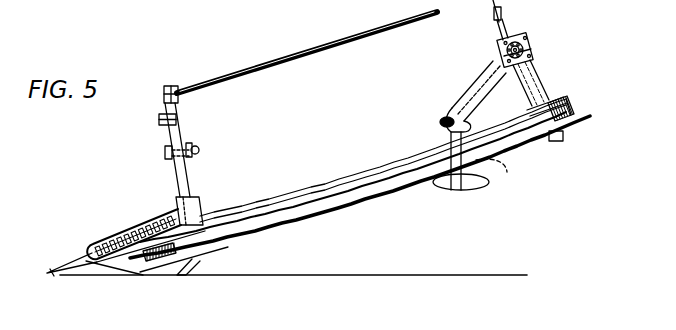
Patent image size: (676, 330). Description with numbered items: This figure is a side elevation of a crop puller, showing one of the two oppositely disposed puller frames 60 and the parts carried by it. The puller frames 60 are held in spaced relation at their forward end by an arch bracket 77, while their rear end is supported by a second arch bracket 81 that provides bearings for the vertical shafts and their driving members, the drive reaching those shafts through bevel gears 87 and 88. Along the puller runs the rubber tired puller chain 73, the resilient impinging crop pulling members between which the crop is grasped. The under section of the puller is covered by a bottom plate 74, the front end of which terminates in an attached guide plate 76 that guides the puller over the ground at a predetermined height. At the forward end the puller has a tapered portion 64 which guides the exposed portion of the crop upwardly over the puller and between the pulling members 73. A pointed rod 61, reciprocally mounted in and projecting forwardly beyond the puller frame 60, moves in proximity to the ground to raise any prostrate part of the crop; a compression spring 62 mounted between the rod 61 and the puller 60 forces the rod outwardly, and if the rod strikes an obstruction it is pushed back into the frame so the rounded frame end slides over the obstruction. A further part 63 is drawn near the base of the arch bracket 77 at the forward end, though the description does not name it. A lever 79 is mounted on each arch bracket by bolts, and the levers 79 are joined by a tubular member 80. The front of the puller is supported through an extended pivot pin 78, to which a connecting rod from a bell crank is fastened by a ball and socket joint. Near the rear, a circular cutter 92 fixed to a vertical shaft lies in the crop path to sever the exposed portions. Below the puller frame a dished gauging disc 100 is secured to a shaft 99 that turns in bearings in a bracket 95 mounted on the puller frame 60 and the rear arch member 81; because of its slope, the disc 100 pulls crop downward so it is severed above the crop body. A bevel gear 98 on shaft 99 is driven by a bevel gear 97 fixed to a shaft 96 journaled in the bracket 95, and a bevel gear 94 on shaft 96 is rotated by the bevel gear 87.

The puller frame 60 is at (305, 202).
The pointed rod 61 is at (73, 264).
The compression spring 62 is at (133, 221).
The bracket 63 is at (198, 205).
The tapered portion 64 is at (97, 238).
The puller chain 73 is at (372, 196).
The bottom plate 74 is at (302, 221).
The guide plate 76 is at (188, 263).
The arch bracket 77 is at (187, 172).
The pivot pin 78 is at (199, 148).
The lever 79 is at (170, 86).
The tubular member 80 is at (273, 60).
The second arch bracket 81 is at (540, 80).
The bevel gear 87 is at (535, 55).
The bevel gear 88 is at (531, 42).
The circular cutter 92 is at (533, 143).
The bevel gear 94 is at (497, 42).
The bracket 95 is at (490, 72).
The shaft 96 is at (470, 93).
The bevel gear 97 is at (441, 119).
The bevel gear 98 is at (445, 129).
The shaft 99 is at (502, 175).
The gauging disc 100 is at (470, 187).